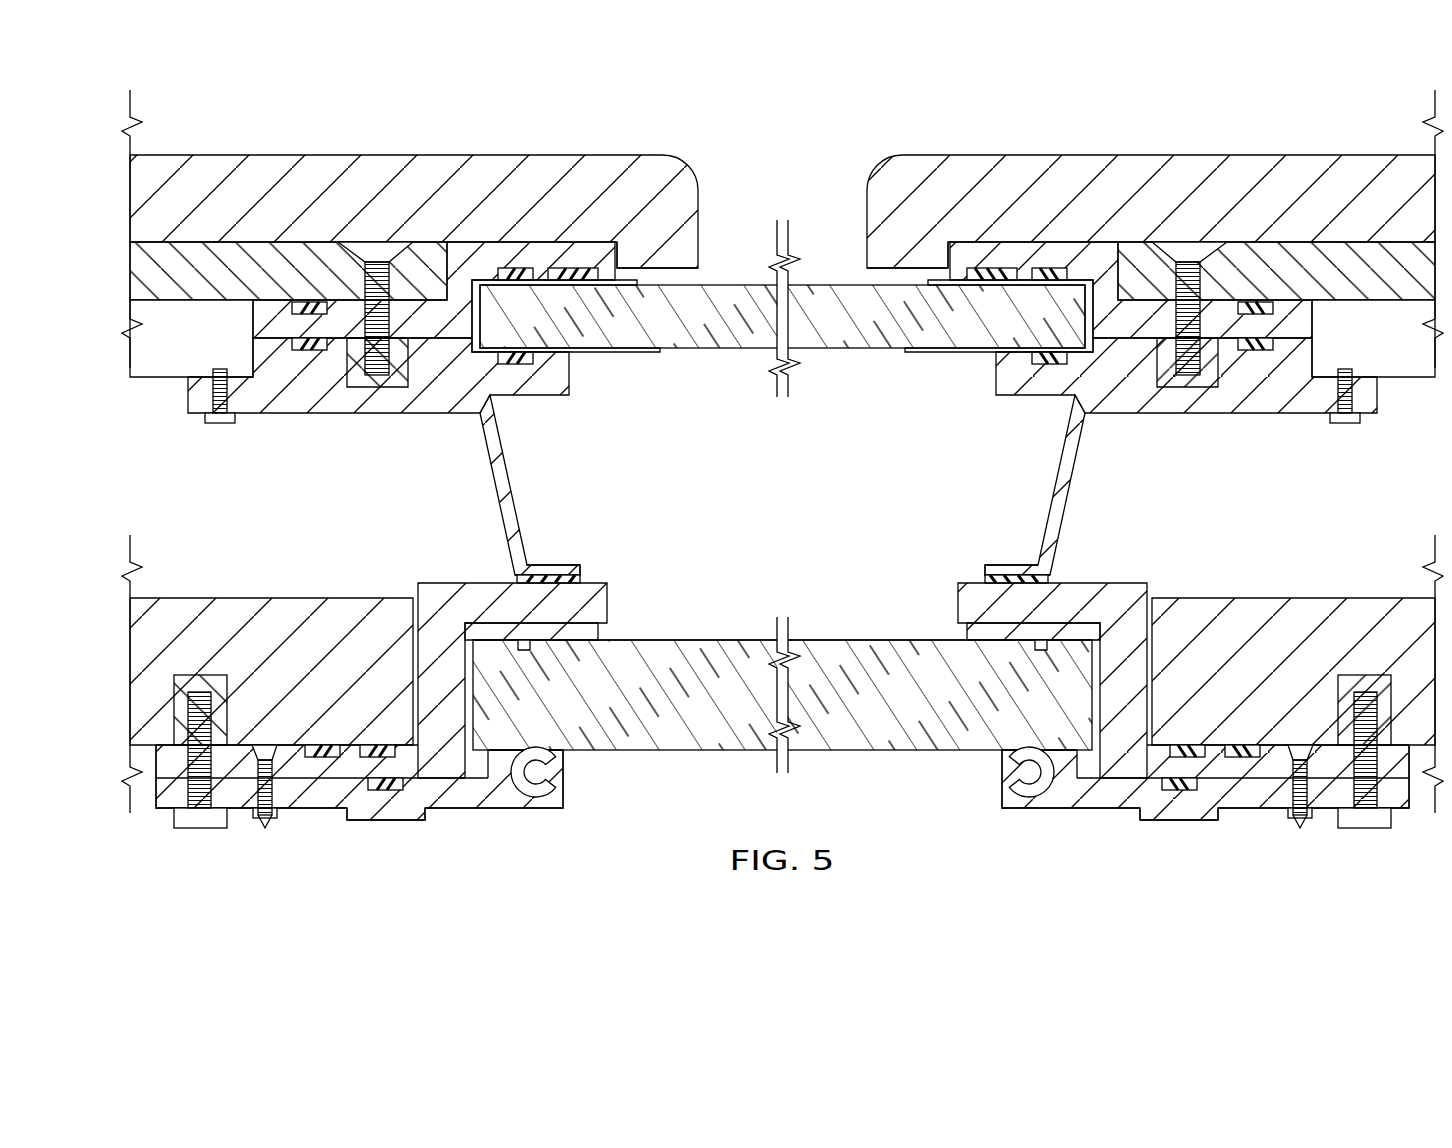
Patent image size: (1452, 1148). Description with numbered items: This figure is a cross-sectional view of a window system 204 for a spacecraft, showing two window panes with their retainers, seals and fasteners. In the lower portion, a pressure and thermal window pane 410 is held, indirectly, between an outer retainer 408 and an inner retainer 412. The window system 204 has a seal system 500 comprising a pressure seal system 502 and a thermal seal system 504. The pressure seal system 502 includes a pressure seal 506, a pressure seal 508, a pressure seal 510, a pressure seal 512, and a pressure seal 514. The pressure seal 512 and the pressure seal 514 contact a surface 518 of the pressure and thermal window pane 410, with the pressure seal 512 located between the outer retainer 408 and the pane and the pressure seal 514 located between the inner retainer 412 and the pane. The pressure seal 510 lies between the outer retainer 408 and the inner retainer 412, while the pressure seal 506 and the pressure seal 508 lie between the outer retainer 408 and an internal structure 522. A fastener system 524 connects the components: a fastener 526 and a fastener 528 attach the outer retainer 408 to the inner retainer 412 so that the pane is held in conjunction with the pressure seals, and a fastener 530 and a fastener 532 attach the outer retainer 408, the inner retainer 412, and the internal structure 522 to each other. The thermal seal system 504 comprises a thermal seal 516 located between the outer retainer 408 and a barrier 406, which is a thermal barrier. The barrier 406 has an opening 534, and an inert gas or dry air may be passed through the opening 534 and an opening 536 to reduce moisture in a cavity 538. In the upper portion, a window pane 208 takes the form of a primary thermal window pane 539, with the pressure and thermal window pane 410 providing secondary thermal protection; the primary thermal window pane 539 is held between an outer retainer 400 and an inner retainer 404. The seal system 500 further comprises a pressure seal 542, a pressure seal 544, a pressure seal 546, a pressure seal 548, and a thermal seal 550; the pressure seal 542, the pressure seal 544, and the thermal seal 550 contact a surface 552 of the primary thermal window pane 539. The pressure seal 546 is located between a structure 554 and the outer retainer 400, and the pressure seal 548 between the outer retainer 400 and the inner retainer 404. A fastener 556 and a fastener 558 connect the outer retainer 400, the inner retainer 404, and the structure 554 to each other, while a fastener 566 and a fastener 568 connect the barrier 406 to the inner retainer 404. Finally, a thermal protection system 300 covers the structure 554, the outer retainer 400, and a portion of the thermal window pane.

The window system 204 is at (805, 140).
The window pane 208 is at (782, 344).
The thermal protection system 300 is at (218, 162).
The outer retainer 400 is at (447, 255).
The inner retainer 404 is at (782, 375).
The barrier 406 is at (782, 542).
The outer retainer 408 is at (782, 674).
The pressure and thermal window pane 410 is at (782, 724).
The inner retainer 412 is at (1095, 805).
The seal system 500 is at (786, 736).
The pressure seal system 502 is at (786, 729).
The thermal seal system 504 is at (783, 489).
The pressure seal 506 is at (782, 649).
The pressure seal 508 is at (782, 666).
The pressure seal 510 is at (782, 841).
The pressure seal 512 is at (782, 623).
The pressure seal 514 is at (782, 778).
The thermal seal 516 is at (782, 562).
The surface 518 is at (782, 617).
The internal structure 522 is at (782, 643).
The fastener system 524 is at (1425, 867).
The fastener 526 is at (274, 814).
The fastener 528 is at (1291, 814).
The fastener 530 is at (200, 779).
The fastener 532 is at (1366, 779).
The opening 534 is at (530, 485).
The opening 536 is at (1035, 485).
The cavity 538 is at (763, 497).
The primary thermal window pane 539 is at (782, 364).
The pressure seal 542 is at (508, 268).
The pressure seal 544 is at (782, 398).
The pressure seal 546 is at (303, 300).
The pressure seal 548 is at (300, 355).
The thermal seal 550 is at (560, 268).
The surface 552 is at (622, 268).
The structure 554 is at (782, 309).
The fastener 556 is at (378, 255).
The fastener 558 is at (1187, 255).
The fastener 566 is at (213, 424).
The fastener 568 is at (1353, 424).